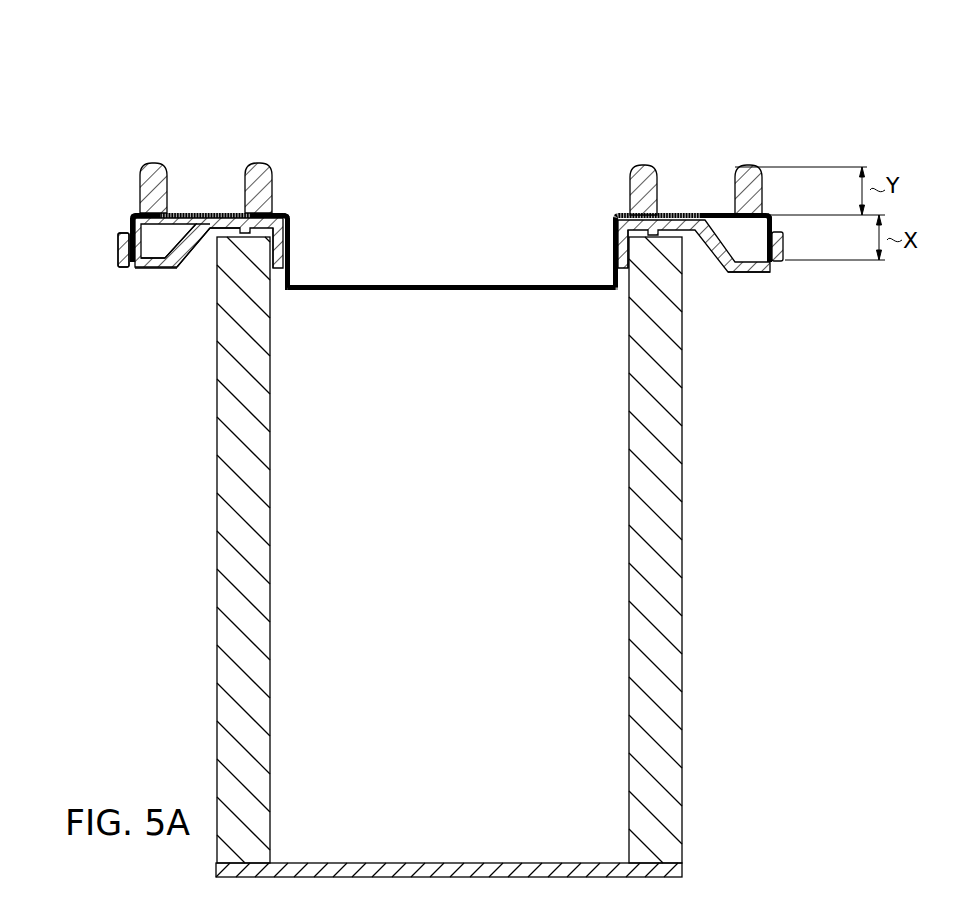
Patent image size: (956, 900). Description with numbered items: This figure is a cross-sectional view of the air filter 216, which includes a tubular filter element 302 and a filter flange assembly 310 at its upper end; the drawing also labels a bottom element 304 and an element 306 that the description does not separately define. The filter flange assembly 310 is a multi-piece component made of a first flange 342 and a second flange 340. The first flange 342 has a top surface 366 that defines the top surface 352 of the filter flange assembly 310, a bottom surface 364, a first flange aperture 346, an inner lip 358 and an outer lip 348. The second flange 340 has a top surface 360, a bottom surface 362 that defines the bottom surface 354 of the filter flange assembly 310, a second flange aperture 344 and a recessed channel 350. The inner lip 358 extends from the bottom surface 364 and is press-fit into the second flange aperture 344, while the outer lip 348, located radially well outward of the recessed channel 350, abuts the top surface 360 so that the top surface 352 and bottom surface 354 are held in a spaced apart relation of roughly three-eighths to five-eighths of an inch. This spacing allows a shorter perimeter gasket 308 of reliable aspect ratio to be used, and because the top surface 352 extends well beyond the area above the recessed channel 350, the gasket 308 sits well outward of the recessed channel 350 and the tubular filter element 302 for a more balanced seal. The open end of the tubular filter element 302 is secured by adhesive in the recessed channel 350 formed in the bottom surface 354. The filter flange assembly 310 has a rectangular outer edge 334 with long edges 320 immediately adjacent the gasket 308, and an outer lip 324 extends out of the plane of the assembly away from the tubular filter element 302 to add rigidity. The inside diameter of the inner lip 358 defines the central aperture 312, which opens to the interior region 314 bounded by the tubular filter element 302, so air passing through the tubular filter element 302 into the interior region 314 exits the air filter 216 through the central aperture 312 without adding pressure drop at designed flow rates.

The air filter 216 is at (455, 133).
The tubular filter element 302 is at (668, 667).
The bottom wall 304 is at (672, 865).
The terminal 306 is at (740, 165).
The perimeter gasket 308 is at (730, 167).
The filter flange assembly 310 is at (162, 278).
The central aperture 312 is at (577, 282).
The interior region 314 is at (465, 657).
The long edges 320 is at (118, 235).
The outer lip 324 is at (767, 243).
The outer edge 334 is at (112, 260).
The second flange 340 is at (782, 262).
The first flange 342 is at (613, 215).
The second flange aperture 344 is at (283, 200).
The first flange aperture 346 is at (288, 222).
The outer lip 348 is at (132, 212).
The recessed channel 350 is at (205, 243).
The top surface 352 is at (762, 215).
The bottom surface 354 is at (780, 270).
The inner lip 358 is at (290, 285).
The top surface 360 is at (128, 222).
The bottom surface 362 is at (140, 268).
The bottom surface 364 is at (180, 262).
The top surface 366 is at (205, 213).